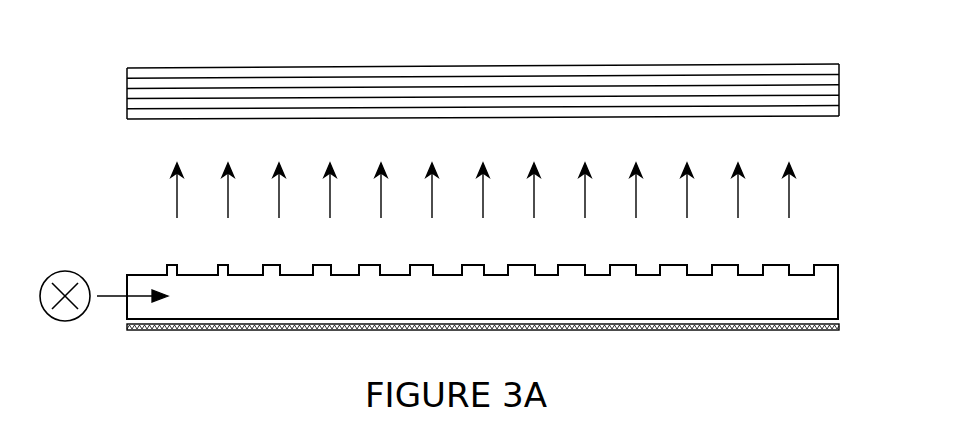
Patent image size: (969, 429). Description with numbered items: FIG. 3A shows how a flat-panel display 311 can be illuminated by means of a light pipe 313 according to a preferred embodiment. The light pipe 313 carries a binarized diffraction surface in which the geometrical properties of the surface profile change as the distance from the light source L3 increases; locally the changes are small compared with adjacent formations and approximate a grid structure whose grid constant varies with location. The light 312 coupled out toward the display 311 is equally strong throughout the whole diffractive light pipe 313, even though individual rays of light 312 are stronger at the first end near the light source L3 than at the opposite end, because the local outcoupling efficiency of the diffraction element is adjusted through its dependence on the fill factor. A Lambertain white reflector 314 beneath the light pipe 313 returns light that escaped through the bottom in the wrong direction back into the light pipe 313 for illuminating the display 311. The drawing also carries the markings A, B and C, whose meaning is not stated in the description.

The flat-panel display 311 is at (140, 68).
The light 312 is at (130, 193).
The light pipe 313 is at (132, 275).
The Lambertain white reflector 314 is at (157, 331).
The light source L3 is at (65, 313).
The light input direction A is at (132, 287).
The light guide thickness B is at (853, 299).
The extraction feature C is at (803, 268).